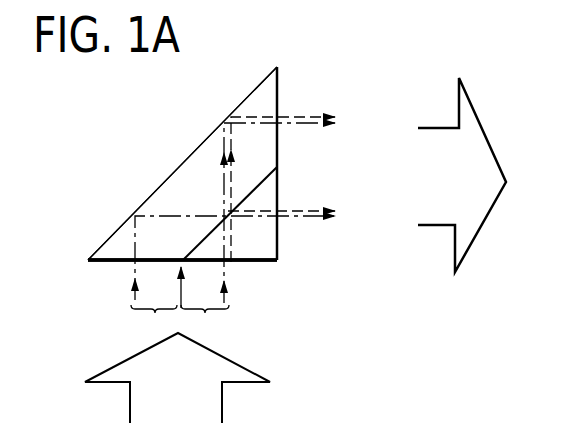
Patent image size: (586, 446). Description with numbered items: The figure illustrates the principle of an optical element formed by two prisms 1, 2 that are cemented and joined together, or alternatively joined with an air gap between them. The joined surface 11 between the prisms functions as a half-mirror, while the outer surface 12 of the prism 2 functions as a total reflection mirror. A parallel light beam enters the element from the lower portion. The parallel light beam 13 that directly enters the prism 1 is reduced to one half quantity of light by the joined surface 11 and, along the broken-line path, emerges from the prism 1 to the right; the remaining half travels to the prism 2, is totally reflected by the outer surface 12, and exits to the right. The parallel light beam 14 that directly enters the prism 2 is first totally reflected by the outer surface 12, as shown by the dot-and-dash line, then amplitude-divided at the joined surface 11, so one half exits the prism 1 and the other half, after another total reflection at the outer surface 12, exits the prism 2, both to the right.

The prism 1 is at (256, 250).
The prism 2 is at (112, 246).
The joined surface 11 is at (196, 240).
The outer surface 12 is at (165, 180).
The parallel light beam 13 is at (205, 323).
The parallel light beam 14 is at (154, 323).